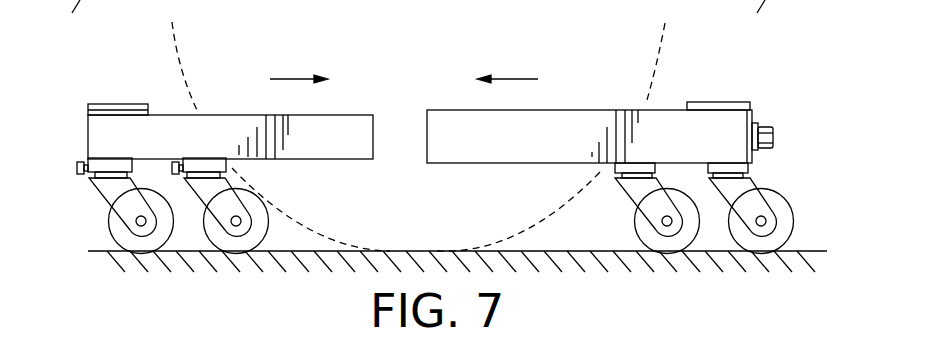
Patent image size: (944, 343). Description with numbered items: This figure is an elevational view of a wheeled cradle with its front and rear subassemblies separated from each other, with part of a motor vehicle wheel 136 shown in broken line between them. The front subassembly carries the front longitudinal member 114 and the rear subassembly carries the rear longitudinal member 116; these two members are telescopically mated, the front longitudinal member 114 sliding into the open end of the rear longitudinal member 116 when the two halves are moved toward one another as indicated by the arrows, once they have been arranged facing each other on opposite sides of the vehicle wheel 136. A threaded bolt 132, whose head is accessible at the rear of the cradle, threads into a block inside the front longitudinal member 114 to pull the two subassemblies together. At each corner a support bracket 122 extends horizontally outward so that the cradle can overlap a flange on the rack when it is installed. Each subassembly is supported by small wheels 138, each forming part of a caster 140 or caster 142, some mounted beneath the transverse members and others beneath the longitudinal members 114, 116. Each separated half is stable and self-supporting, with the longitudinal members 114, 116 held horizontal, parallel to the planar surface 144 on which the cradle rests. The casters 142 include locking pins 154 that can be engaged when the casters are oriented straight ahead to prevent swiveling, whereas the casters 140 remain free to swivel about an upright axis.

The front longitudinal member 114 is at (224, 115).
The rear longitudinal member 116 is at (585, 110).
The support bracket 122 is at (126, 104).
The threaded bolt 132 is at (773, 138).
The wheel 136 is at (665, 48).
The small wheel 138 is at (257, 240).
The caster 140 is at (618, 190).
The caster 142 is at (102, 193).
The planar surface 144 is at (518, 252).
The locking pin 154 is at (81, 163).